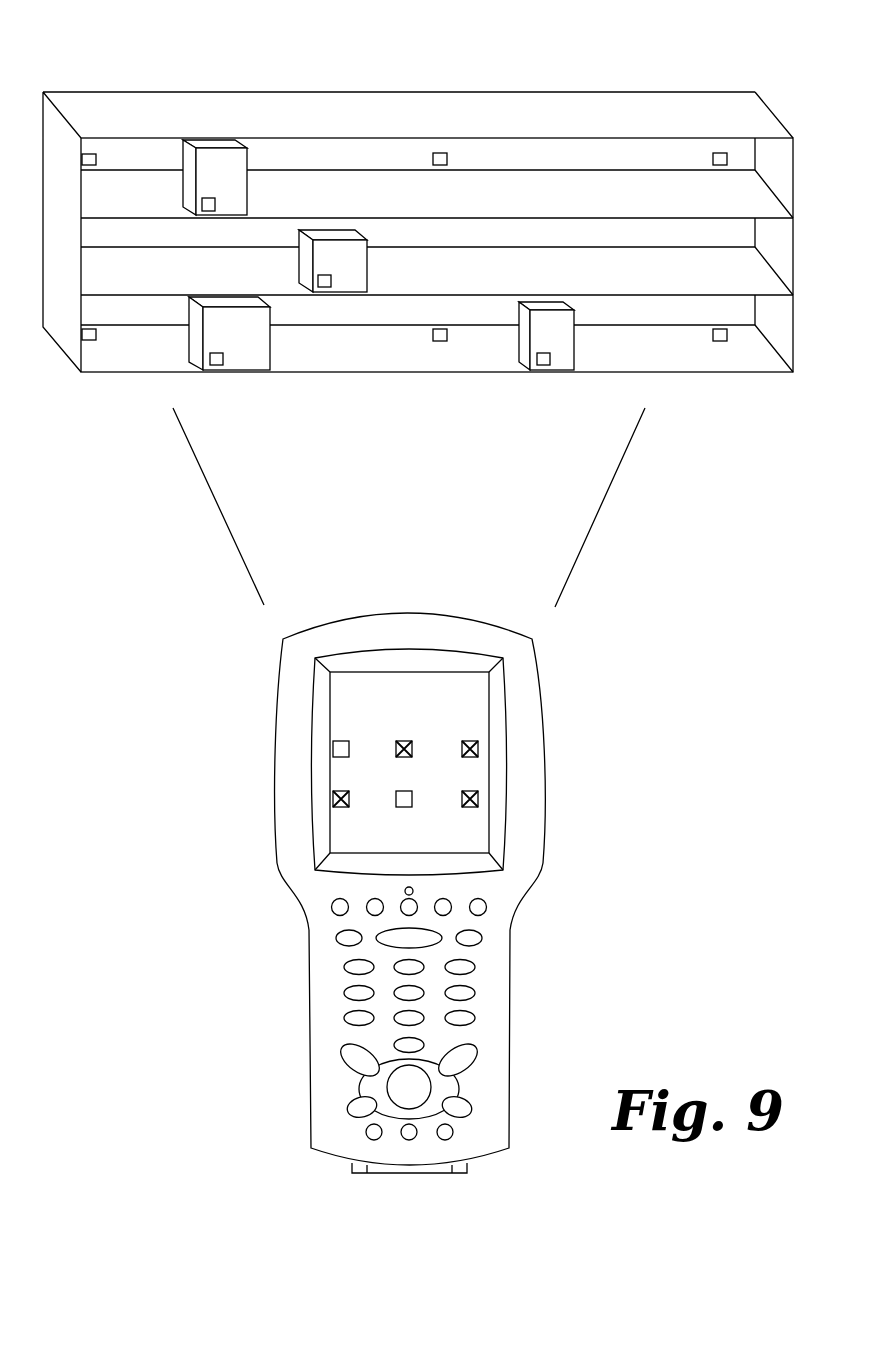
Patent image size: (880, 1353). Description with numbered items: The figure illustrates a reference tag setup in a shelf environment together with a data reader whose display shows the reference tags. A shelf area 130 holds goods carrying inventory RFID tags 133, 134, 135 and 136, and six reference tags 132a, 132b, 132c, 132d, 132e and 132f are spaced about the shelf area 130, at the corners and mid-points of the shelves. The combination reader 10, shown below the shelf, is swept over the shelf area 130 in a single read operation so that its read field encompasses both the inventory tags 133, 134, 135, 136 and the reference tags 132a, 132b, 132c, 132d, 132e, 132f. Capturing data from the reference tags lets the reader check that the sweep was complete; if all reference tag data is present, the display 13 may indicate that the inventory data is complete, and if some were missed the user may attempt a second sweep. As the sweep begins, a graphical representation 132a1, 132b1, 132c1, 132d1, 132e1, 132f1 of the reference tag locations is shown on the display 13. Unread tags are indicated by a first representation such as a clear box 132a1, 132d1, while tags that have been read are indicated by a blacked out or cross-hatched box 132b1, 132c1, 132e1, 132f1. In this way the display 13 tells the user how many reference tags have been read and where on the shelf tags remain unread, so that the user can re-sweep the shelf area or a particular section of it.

The shelf area 130 is at (82, 58).
The reference tag 132a is at (88, 152).
The reference tag 132b is at (88, 341).
The reference tag 132c is at (440, 152).
The reference tag 132d is at (440, 341).
The reference tag 132e is at (722, 341).
The reference tag 132f is at (720, 152).
The inventory RFID tag 133 is at (550, 362).
The inventory RFID tag 134 is at (207, 198).
The inventory RFID tag 135 is at (330, 288).
The inventory RFID tag 136 is at (220, 366).
The combination reader 10 is at (240, 707).
The display 13 is at (330, 837).
The graphical representation of reference tag location 132a1 is at (333, 750).
The graphical representation of reference tag location 132b1 is at (340, 808).
The graphical representation of reference tag location 132c1 is at (405, 740).
The graphical representation of reference tag location 132d1 is at (403, 808).
The graphical representation of reference tag location 132e1 is at (470, 791).
The graphical representation of reference tag location 132f1 is at (472, 740).